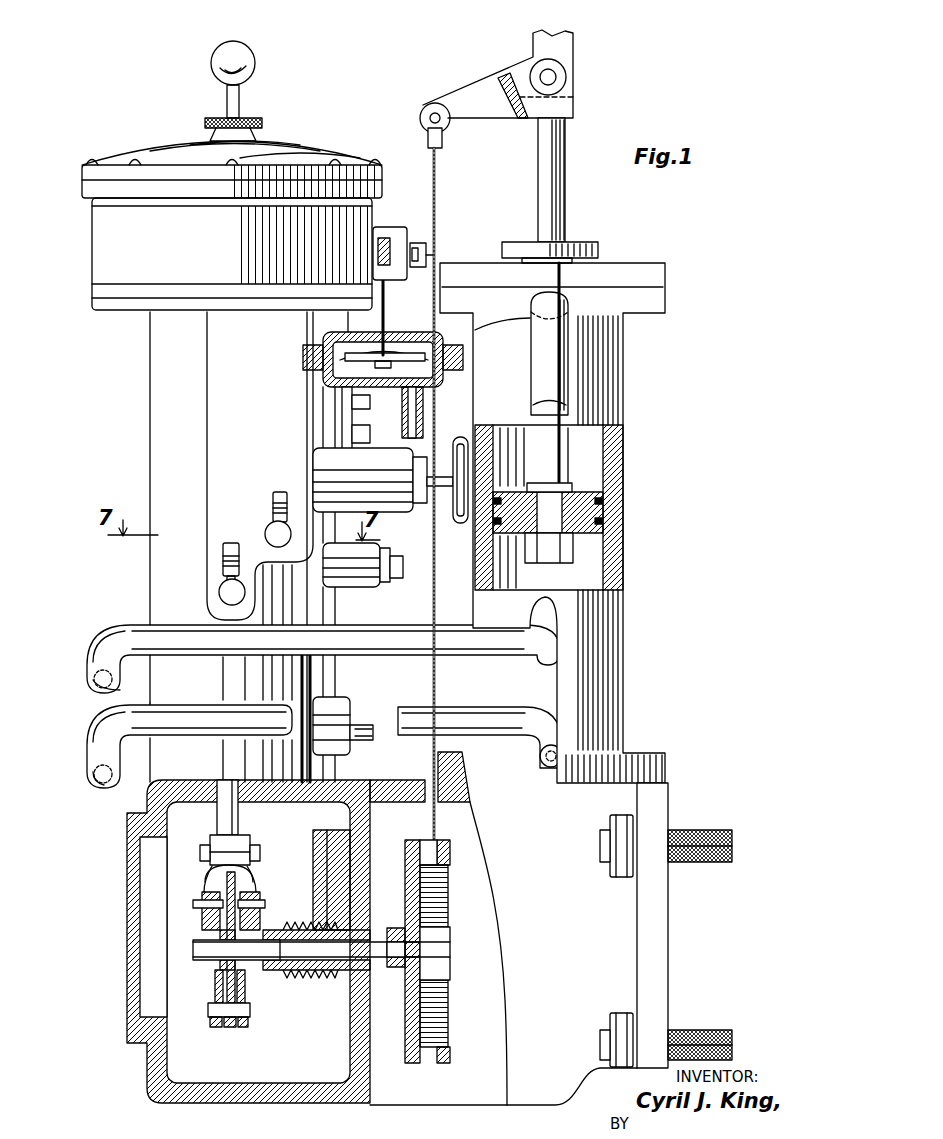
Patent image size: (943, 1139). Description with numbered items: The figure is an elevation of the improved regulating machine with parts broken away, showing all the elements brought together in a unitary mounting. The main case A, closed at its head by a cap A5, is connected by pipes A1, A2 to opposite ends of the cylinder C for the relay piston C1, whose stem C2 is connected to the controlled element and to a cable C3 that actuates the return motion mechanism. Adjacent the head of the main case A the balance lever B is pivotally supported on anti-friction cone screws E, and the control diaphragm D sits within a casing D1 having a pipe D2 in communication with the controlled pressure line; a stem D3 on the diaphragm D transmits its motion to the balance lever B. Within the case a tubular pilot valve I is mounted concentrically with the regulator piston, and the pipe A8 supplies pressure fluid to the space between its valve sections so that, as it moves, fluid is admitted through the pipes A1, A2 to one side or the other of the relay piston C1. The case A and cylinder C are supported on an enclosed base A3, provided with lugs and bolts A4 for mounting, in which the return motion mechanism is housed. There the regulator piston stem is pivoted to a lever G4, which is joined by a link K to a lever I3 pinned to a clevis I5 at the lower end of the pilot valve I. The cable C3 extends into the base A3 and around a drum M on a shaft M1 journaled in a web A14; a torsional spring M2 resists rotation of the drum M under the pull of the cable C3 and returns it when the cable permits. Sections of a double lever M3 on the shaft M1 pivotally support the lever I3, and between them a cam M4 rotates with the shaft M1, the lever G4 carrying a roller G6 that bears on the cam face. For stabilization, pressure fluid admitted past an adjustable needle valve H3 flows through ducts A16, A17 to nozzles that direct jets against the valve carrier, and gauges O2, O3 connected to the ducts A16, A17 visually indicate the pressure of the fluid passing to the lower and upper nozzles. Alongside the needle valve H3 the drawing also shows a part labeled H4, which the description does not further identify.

The main case A is at (165, 410).
The pipe A1 is at (125, 630).
The pipe A2 is at (92, 758).
The enclosed base A3 is at (300, 1100).
The lugs and bolts A4 is at (700, 832).
The cap A5 is at (162, 162).
The pressure fluid pipe A8 is at (375, 718).
The web A14 is at (362, 1016).
The duct A16 is at (224, 596).
The duct A17 is at (270, 525).
The balance lever B is at (386, 236).
The cylinder C is at (608, 651).
The relay piston C1 is at (583, 500).
The piston stem C2 is at (566, 200).
The cable C3 is at (437, 179).
The control diaphragm D is at (362, 398).
The diaphragm casing D1 is at (332, 390).
The pipe D2 is at (414, 432).
The diaphragm stem D3 is at (385, 320).
The anti-friction cone screws E is at (418, 240).
The lever G4 is at (214, 1028).
The roller G6 is at (228, 1028).
The needle valve H3 is at (398, 578).
The link H4 is at (443, 500).
The pilot valve I is at (219, 819).
The lever I3 is at (209, 886).
The clevis I5 is at (210, 878).
The link K is at (212, 997).
The drum M is at (450, 1049).
The shaft M1 is at (410, 950).
The torsional spring M2 is at (308, 978).
The double lever M3 is at (196, 921).
The cam M4 is at (226, 990).
The gauge O2 is at (231, 545).
The gauge O3 is at (280, 494).